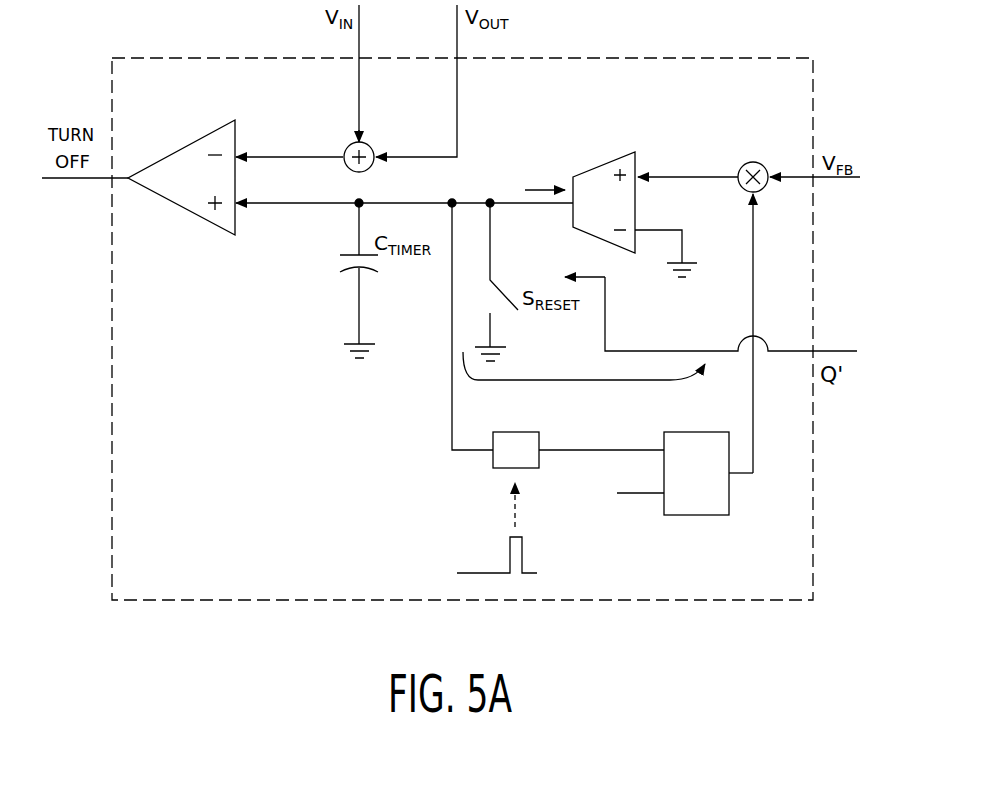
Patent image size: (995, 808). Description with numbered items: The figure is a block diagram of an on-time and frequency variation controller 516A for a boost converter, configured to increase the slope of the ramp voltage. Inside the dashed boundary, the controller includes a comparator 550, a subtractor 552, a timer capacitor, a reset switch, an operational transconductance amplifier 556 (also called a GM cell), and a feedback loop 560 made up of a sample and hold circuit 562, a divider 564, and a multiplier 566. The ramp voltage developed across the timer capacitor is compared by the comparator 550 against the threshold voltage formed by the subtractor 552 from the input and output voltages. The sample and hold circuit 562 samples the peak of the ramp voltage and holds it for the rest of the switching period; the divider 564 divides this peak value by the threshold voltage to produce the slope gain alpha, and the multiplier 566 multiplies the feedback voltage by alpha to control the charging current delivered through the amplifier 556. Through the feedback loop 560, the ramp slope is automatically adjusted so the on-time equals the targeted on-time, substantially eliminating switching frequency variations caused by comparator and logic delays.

The on-time and frequency variation controller 516A is at (668, 600).
The comparator 550 is at (200, 140).
The subtractor 552 is at (342, 138).
The operational transconductance amplifier 556 is at (592, 160).
The feedback loop 560 is at (527, 382).
The sample and hold circuit 562 is at (493, 462).
The divider 564 is at (697, 515).
The multiplier 566 is at (745, 158).